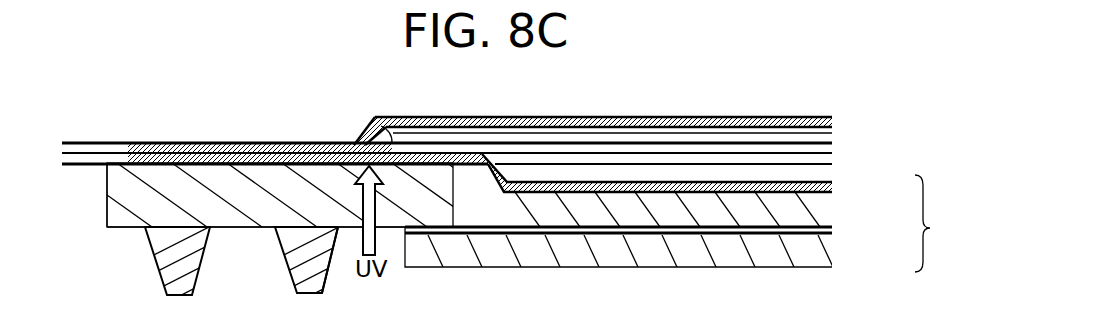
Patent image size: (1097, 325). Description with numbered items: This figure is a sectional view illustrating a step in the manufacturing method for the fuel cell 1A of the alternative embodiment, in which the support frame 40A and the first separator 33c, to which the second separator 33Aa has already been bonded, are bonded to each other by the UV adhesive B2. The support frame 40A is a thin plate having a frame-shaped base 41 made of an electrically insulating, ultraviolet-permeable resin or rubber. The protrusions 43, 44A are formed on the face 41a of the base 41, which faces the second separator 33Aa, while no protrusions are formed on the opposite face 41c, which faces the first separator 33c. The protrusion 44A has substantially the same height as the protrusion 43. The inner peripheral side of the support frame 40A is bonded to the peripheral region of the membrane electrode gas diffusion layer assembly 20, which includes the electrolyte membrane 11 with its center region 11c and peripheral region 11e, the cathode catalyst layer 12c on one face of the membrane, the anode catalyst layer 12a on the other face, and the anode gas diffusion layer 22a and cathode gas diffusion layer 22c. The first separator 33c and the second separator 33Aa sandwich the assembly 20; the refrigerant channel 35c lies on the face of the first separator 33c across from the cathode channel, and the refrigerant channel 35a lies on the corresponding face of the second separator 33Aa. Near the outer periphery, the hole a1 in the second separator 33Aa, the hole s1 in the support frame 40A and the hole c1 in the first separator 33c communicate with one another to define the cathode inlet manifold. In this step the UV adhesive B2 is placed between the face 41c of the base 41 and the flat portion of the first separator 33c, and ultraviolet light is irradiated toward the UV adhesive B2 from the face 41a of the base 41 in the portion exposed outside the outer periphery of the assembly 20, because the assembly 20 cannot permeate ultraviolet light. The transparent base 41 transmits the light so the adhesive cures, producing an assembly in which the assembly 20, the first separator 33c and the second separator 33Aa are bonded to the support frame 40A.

The fuel cell 1A is at (833, 75).
The electrolyte membrane 11 is at (834, 228).
The center region 11c is at (557, 182).
The peripheral region 11e is at (483, 258).
The anode catalyst layer 12a is at (833, 234).
The cathode catalyst layer 12c is at (833, 226).
The membrane electrode gas diffusion layer assembly 20 is at (940, 223).
The anode gas diffusion layer 22a is at (832, 265).
The cathode gas diffusion layer 22c is at (826, 200).
The second separator 33Aa is at (672, 117).
The first separator 33c is at (832, 162).
The refrigerant channel 35a is at (598, 138).
The refrigerant channel 35c is at (727, 170).
The support frame 40A is at (106, 228).
The base 41 is at (128, 217).
The face 41a is at (345, 230).
The face 41c is at (250, 143).
The protrusion 43 is at (205, 240).
The protrusion 44A is at (296, 291).
The UV adhesive B2 is at (385, 117).
The hole a1 is at (115, 150).
The hole c1 is at (82, 158).
The hole s1 is at (72, 215).